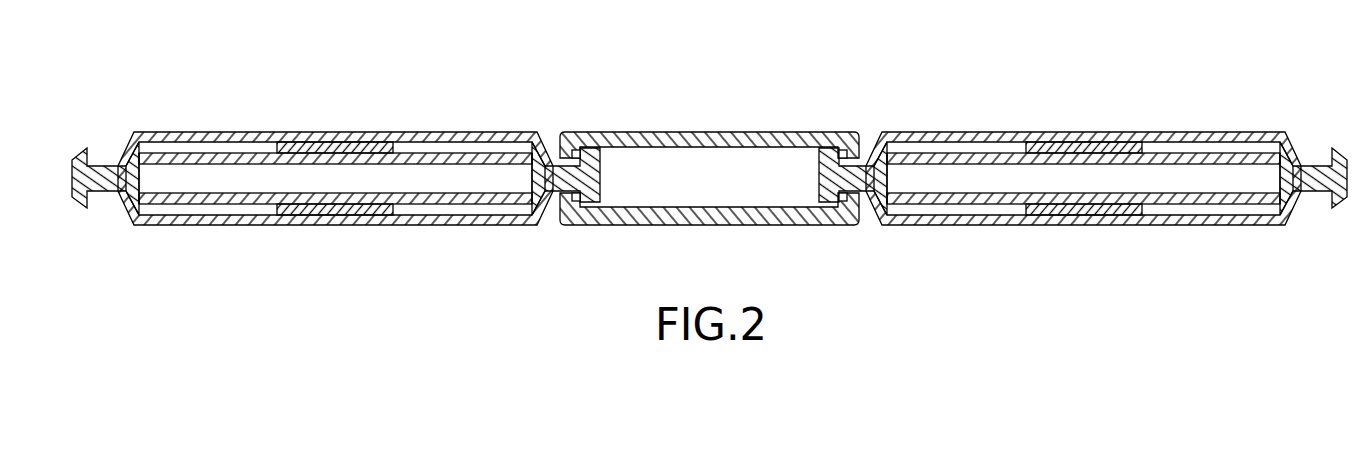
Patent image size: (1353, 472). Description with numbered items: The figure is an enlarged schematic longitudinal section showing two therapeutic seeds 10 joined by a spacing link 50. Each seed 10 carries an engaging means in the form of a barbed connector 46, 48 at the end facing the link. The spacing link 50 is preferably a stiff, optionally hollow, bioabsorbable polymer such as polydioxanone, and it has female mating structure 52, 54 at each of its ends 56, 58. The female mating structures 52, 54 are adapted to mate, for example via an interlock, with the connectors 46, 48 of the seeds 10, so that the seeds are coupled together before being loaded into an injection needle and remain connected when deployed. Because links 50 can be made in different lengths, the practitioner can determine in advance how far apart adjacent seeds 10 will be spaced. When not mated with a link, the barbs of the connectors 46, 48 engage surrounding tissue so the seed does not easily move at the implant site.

The seed 10 is at (395, 131).
The connector 46 is at (822, 152).
The connector 48 is at (592, 172).
The spacing link 50 is at (707, 131).
The female mating structure 52 is at (583, 225).
The female mating structure 54 is at (845, 225).
The end 56 is at (622, 173).
The end 58 is at (802, 178).